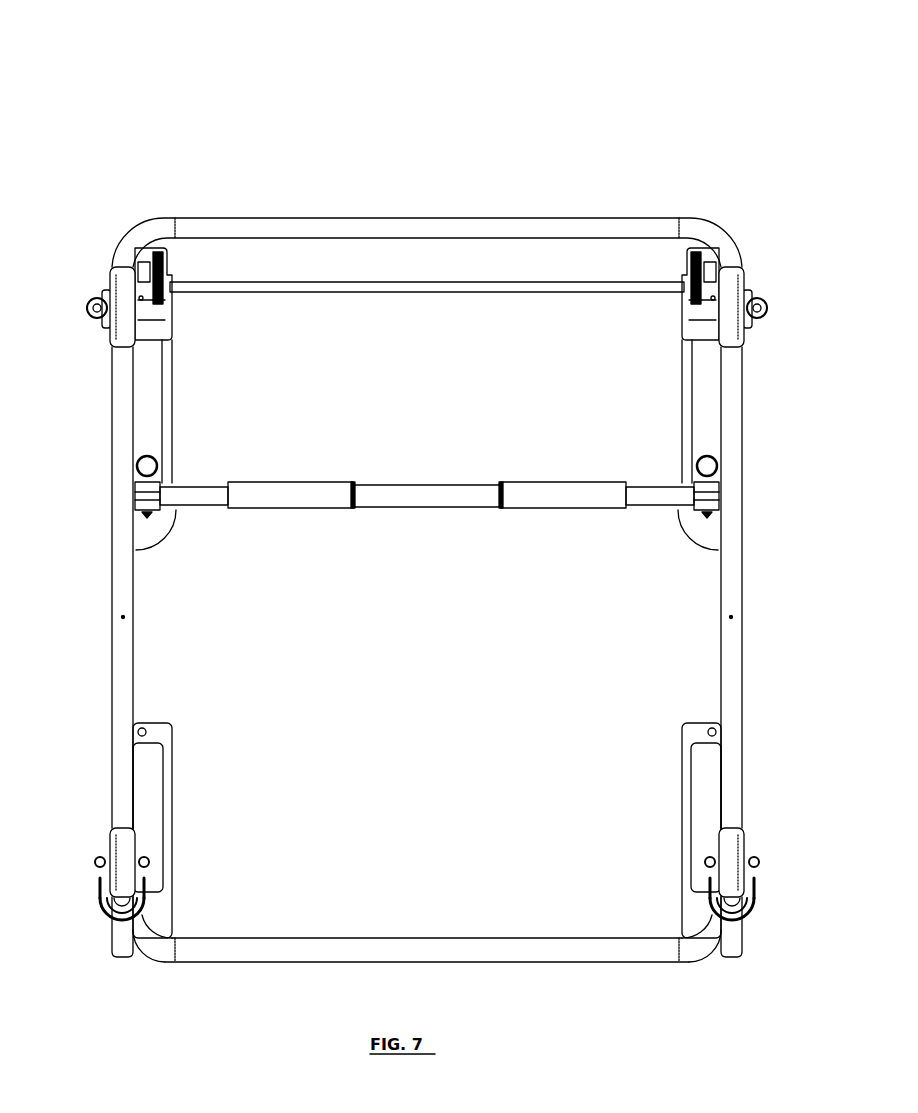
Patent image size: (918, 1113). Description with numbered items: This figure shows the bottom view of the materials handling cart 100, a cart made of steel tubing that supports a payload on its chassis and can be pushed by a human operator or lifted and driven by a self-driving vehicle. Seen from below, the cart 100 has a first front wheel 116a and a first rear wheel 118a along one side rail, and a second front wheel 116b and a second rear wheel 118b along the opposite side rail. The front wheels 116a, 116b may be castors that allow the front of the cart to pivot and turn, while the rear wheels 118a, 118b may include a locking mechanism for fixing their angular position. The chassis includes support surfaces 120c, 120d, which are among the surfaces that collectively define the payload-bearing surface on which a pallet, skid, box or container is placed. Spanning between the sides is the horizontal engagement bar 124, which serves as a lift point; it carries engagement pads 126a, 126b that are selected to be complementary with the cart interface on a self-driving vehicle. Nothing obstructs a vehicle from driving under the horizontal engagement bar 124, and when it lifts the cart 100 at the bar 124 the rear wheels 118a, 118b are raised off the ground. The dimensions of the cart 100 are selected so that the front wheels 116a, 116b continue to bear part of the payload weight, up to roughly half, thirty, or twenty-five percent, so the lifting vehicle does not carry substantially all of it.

The materials handling cart 100 is at (497, 62).
The first front wheel 116a is at (724, 862).
The second front wheel 116b is at (130, 862).
The first rear wheel 118a is at (724, 298).
The second rear wheel 118b is at (130, 298).
The support surface 120c is at (686, 413).
The support surface 120d is at (168, 413).
The horizontal engagement bar 124 is at (448, 495).
The engagement pad 126a is at (612, 495).
The engagement pad 126b is at (253, 495).